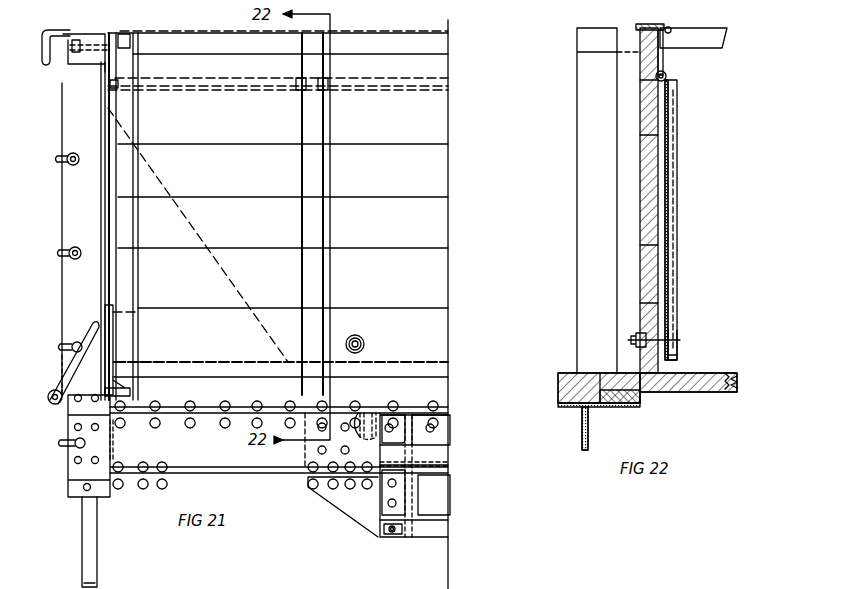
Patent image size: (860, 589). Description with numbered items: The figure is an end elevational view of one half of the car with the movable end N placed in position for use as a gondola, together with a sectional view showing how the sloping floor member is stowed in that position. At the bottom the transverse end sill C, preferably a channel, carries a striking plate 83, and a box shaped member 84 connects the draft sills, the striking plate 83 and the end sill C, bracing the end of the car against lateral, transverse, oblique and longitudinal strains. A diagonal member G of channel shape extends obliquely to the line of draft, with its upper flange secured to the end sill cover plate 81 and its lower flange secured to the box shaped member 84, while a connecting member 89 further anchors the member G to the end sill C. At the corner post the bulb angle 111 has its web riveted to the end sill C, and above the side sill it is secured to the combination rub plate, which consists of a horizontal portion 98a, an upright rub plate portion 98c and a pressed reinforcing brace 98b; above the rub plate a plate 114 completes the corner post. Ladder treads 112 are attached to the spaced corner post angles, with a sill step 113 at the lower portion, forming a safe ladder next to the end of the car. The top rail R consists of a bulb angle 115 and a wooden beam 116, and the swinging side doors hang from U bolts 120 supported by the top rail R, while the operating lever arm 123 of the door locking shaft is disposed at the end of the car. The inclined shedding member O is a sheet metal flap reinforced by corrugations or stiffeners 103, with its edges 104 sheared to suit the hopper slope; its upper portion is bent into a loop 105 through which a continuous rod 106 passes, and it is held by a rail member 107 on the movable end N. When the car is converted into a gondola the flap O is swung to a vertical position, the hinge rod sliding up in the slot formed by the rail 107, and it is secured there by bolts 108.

In FIG. 21, the movable end N is at (360, 46).
In FIG. 22, the movable end N is at (650, 110).
In FIG. 21, the bulb angle 111 is at (85, 295).
In FIG. 21, the plate 114 is at (108, 283).
In FIG. 21, the wooden beam 116 is at (78, 33).
In FIG. 21, the bulb angle 115 is at (58, 83).
In FIG. 21, the continuous rod 106 is at (115, 82).
In FIG. 22, the continuous rod 106 is at (668, 76).
In FIG. 21, the loop 105 is at (295, 78).
In FIG. 22, the loop 105 is at (667, 65).
In FIG. 21, the ladder treads 112 is at (62, 253).
In FIG. 21, the edges 104 is at (232, 270).
In FIG. 21, the bolts 108 is at (364, 342).
In FIG. 22, the bolts 108 is at (680, 335).
In FIG. 21, the horizontal portion 98a is at (118, 392).
In FIG. 21, the reinforcing brace 98b is at (168, 362).
In FIG. 21, the upright rub plate portion 98c is at (113, 340).
In FIG. 21, the operating lever arm 123 is at (65, 335).
In FIG. 21, the U bolts 120 is at (55, 403).
In FIG. 21, the sill step 113 is at (88, 565).
In FIG. 21, the end sill C is at (250, 462).
In FIG. 22, the end sill C is at (588, 425).
In FIG. 21, the connecting member 89 is at (302, 455).
In FIG. 21, the box shaped member 84 is at (345, 480).
In FIG. 21, the diagonal members G is at (368, 411).
In FIG. 21, the striking plate 83 is at (440, 452).
In FIG. 22, the rail member 107 is at (658, 45).
In FIG. 22, the top rail R is at (706, 40).
In FIG. 22, the inclined shedding member O is at (675, 165).
In FIG. 22, the stiffeners 103 is at (680, 350).
In FIG. 22, the end sill cover plate 81 is at (628, 400).